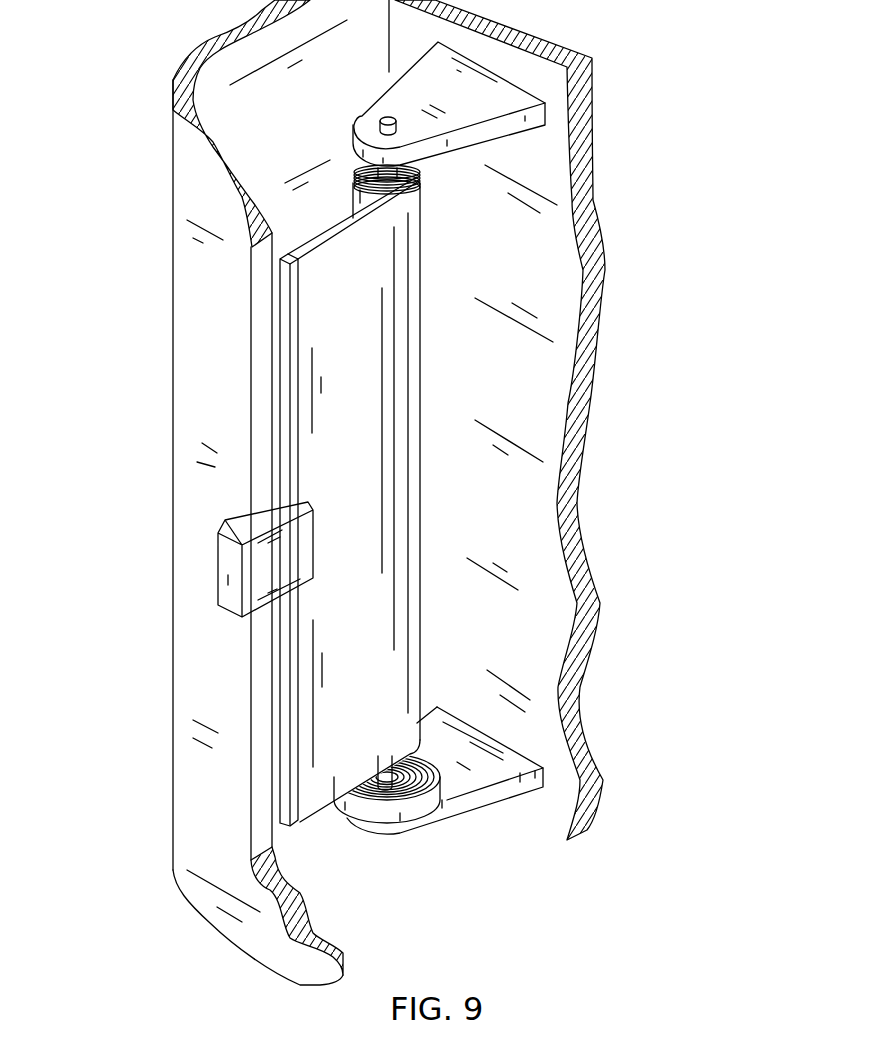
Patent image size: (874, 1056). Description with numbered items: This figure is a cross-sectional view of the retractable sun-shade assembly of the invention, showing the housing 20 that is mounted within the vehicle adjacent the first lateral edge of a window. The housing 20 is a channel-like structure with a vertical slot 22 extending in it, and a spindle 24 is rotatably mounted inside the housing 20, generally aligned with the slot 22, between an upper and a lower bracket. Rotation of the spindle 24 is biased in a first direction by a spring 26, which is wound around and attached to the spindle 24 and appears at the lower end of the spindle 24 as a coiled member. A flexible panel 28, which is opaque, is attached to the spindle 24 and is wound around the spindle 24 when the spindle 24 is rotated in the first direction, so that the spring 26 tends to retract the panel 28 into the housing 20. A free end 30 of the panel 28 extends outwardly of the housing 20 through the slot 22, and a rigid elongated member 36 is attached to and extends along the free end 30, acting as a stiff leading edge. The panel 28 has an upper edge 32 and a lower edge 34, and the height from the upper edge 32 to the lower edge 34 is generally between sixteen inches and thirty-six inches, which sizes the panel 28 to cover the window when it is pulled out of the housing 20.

The housing 20 is at (550, 668).
The vertical slot 22 is at (258, 453).
The spindle 24 is at (437, 768).
The spring 26 is at (390, 822).
The flexible panel 28 is at (373, 457).
The free end 30 is at (282, 365).
The upper edge 32 is at (327, 228).
The lower edge 34 is at (330, 808).
The rigid elongated member 36 is at (292, 752).